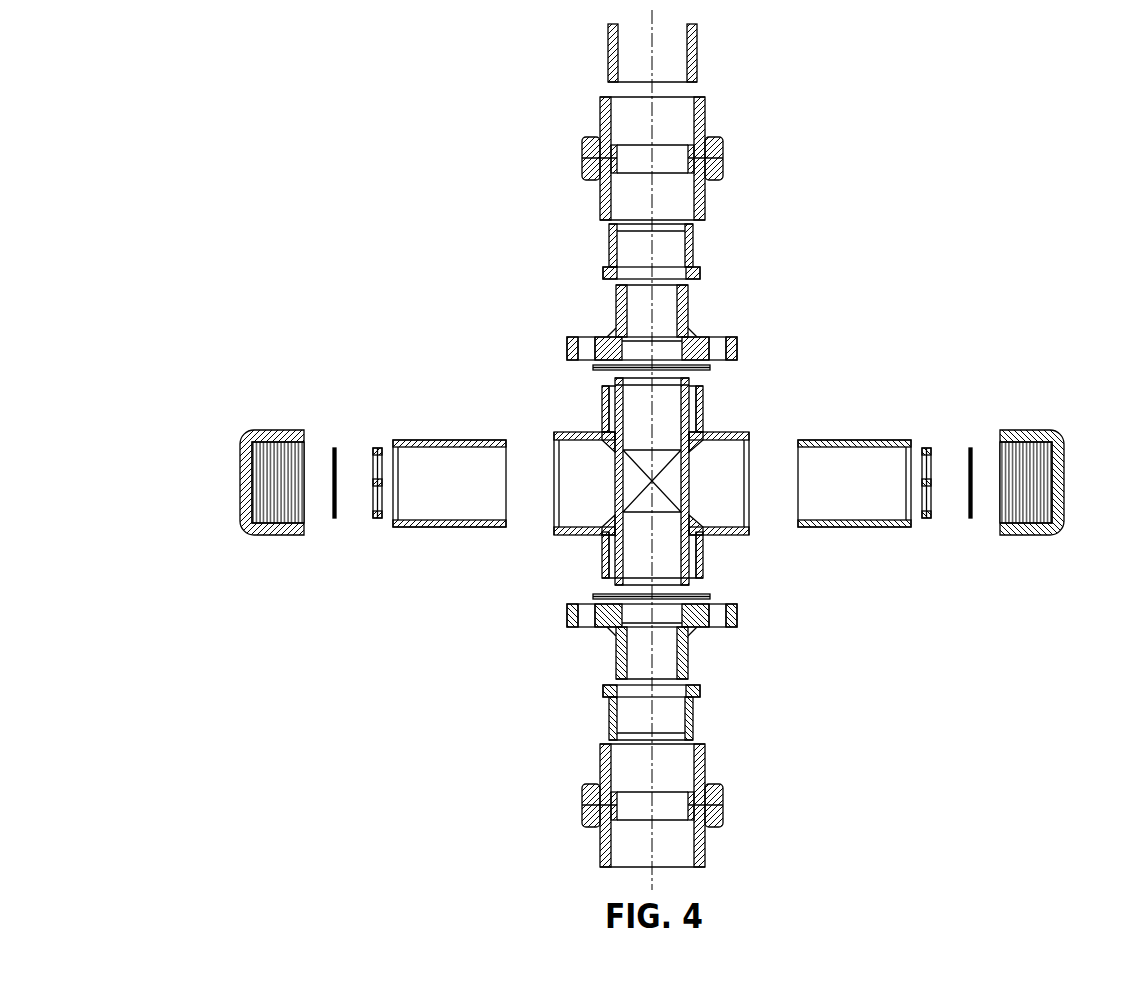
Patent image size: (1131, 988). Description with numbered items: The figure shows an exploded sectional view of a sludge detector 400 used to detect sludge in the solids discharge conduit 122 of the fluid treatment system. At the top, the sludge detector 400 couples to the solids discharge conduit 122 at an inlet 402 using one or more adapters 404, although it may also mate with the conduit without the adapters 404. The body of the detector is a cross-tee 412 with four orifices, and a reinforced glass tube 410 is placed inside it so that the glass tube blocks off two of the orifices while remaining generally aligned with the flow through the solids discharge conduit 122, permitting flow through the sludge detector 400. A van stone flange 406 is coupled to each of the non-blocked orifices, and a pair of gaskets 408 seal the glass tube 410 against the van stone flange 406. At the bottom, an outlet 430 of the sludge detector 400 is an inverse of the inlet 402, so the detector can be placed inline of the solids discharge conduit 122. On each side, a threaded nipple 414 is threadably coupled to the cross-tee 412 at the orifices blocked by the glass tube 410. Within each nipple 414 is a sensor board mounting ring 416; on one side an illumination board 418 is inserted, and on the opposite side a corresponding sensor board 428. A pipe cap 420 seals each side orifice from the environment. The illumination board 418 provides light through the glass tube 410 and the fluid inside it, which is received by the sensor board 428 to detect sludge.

The solids discharge conduit 122 is at (608, 34).
The sludge detector 400 is at (462, 827).
The inlet 402 is at (600, 105).
The adapter 404 is at (612, 248).
The van stone flange 406 is at (737, 347).
The gasket 408 is at (593, 368).
The glass tube 410 is at (605, 412).
The cross-tee 412 is at (554, 433).
The threaded nipple 414 is at (445, 440).
The sensor board mounting ring 416 is at (377, 455).
The illumination board 418 is at (333, 455).
The pipe cap 420 is at (246, 432).
The sensor board 428 is at (972, 455).
The outlet 430 is at (705, 860).